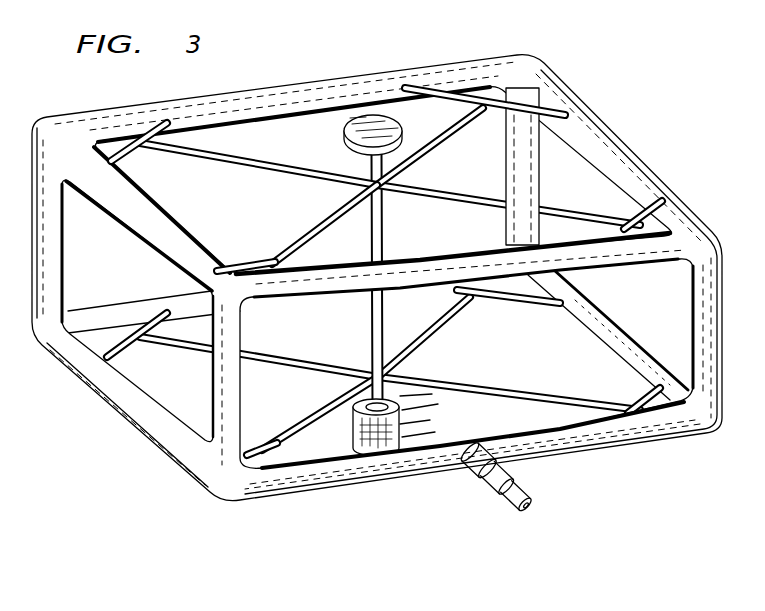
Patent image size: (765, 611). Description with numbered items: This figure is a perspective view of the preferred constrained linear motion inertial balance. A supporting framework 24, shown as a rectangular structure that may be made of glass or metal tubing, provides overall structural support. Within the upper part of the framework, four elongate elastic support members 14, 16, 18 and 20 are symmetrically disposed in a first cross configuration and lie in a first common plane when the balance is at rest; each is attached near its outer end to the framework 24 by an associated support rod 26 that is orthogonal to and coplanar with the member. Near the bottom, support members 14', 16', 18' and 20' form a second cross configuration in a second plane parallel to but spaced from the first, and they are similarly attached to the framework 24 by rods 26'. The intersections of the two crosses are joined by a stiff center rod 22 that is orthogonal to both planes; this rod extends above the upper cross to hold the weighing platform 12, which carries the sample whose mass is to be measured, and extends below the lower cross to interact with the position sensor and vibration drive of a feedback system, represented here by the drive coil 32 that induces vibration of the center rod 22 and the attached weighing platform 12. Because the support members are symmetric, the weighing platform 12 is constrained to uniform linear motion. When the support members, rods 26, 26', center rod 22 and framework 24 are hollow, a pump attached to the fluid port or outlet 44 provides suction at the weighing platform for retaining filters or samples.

The weighing platform 12 is at (347, 122).
The elongate elastic support member 14 is at (508, 214).
The elongate elastic support member 16 is at (324, 224).
The elongate elastic support member 18 is at (258, 175).
The elongate elastic support member 20 is at (430, 146).
The center rod 22 is at (372, 327).
The supporting framework 24 is at (60, 257).
The support rod 26 is at (386, 148).
The support member 14' is at (509, 372).
The support member 16' is at (320, 413).
The support member 18' is at (259, 366).
The support member 20' is at (424, 337).
The rod 26' is at (383, 357).
The drive coil 32 is at (400, 423).
The fluid port or outlet 44 is at (538, 493).